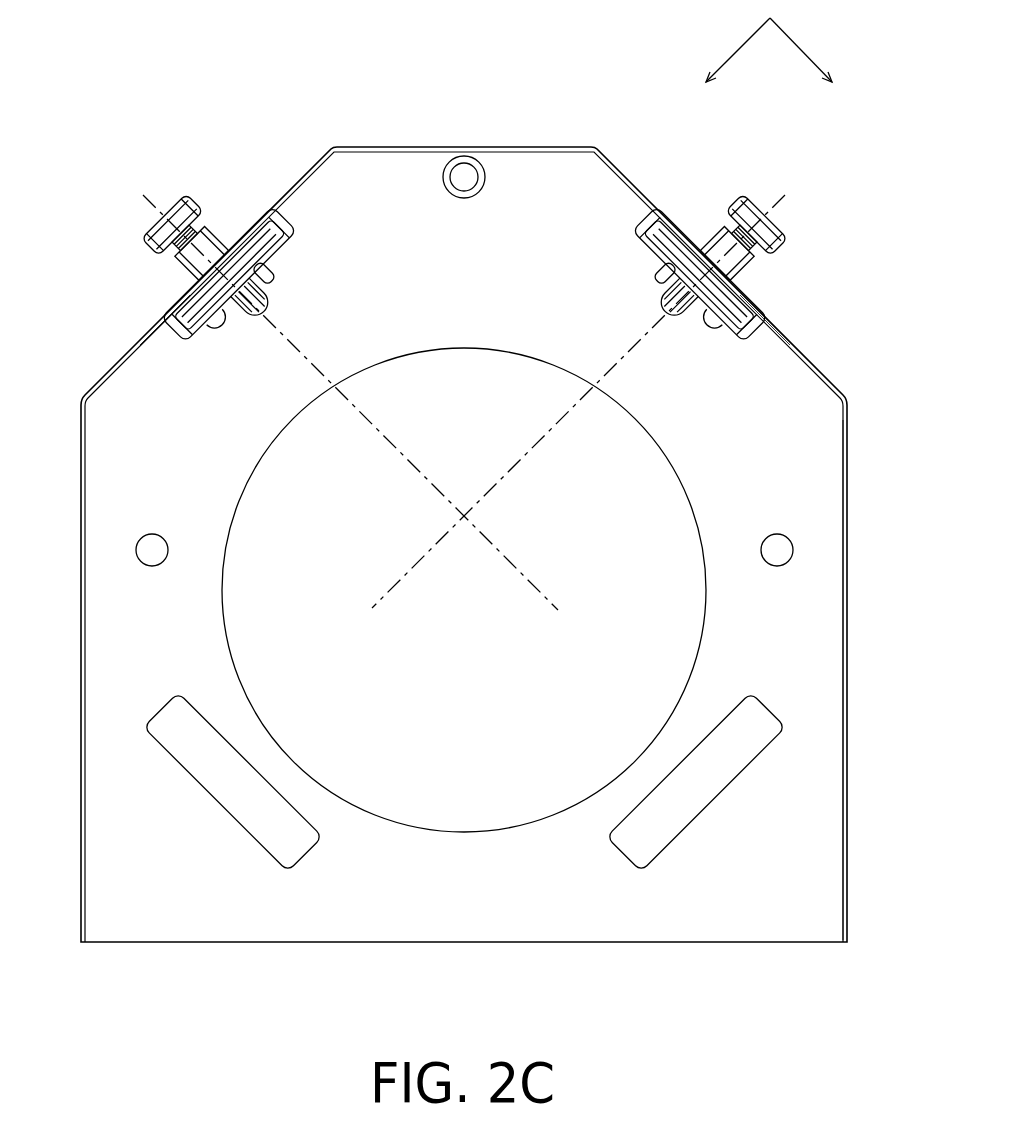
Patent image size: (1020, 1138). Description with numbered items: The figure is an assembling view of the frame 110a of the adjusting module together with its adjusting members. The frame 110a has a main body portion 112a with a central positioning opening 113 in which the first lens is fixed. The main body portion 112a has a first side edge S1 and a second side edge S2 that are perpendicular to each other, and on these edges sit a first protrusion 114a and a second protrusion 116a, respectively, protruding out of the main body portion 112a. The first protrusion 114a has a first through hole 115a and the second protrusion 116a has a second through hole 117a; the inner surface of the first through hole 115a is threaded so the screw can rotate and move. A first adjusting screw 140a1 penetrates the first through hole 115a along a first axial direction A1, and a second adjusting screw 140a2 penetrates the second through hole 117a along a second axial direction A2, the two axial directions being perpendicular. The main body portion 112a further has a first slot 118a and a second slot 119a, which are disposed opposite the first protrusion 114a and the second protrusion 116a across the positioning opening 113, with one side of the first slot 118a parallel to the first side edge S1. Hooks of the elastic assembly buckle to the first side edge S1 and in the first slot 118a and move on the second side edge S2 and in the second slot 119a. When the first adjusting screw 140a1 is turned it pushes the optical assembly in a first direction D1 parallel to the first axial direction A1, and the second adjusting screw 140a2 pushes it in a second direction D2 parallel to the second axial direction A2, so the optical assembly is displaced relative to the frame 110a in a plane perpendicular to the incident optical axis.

The frame 110a is at (125, 997).
The main body portion 112a is at (803, 905).
The positioning opening 113 is at (378, 806).
The first protrusion 114a is at (760, 317).
The first through hole 115a is at (705, 256).
The second protrusion 116a is at (282, 212).
The second through hole 117a is at (222, 258).
The first slot 118a is at (162, 707).
The second slot 119a is at (628, 844).
The first adjusting screw 140a1 is at (750, 213).
The second adjusting screw 140a2 is at (173, 213).
The first side edge S1 is at (805, 358).
The second side edge S2 is at (115, 362).
The first axial direction A1 is at (566, 417).
The second axial direction A2 is at (365, 417).
The first direction D1 is at (726, 65).
The second direction D2 is at (810, 65).